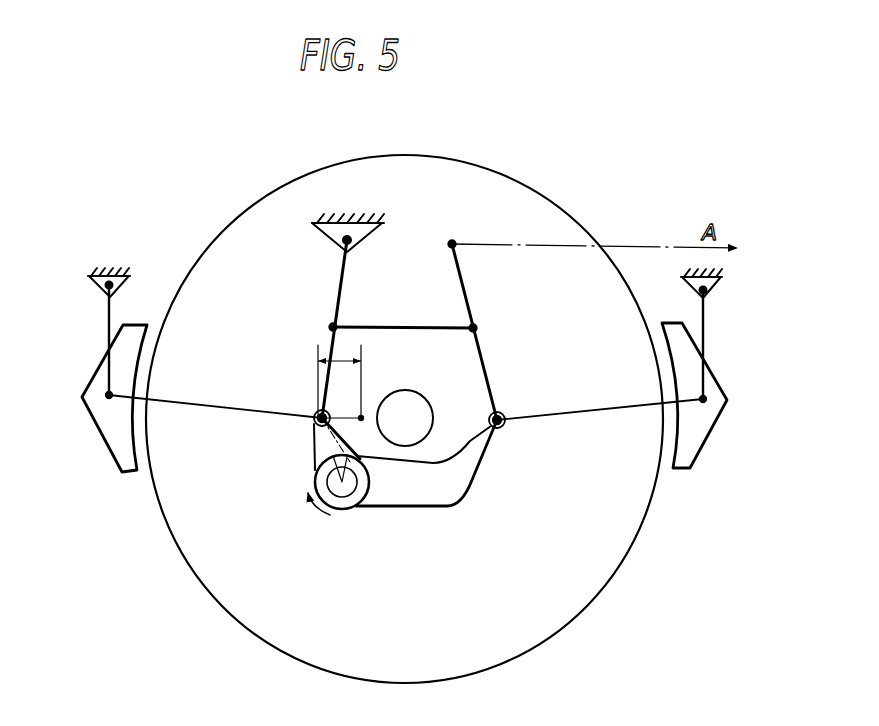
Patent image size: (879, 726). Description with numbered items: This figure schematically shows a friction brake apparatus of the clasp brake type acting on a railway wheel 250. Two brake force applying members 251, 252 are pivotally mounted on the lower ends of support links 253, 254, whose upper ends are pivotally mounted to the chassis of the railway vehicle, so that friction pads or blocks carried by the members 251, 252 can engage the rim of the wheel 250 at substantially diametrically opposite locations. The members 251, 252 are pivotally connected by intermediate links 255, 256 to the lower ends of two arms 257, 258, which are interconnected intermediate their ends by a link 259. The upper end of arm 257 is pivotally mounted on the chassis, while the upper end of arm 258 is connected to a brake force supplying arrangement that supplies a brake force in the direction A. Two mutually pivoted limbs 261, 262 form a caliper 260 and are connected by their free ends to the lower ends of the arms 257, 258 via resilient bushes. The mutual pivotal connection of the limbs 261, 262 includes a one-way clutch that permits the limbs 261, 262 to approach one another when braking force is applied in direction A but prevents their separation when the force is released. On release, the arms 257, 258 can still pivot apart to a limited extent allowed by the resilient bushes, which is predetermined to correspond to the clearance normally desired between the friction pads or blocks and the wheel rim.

The railway wheel 250 is at (267, 195).
The brake force applying member 251 is at (115, 443).
The brake force applying member 252 is at (695, 452).
The support link 253 is at (107, 315).
The support link 254 is at (703, 312).
The intermediate link 255 is at (232, 412).
The intermediate link 256 is at (585, 410).
The arm 257 is at (318, 377).
The arm 258 is at (485, 372).
The link 259 is at (398, 326).
The caliper 260 is at (308, 515).
The limb 261 is at (320, 448).
The limb 262 is at (422, 500).